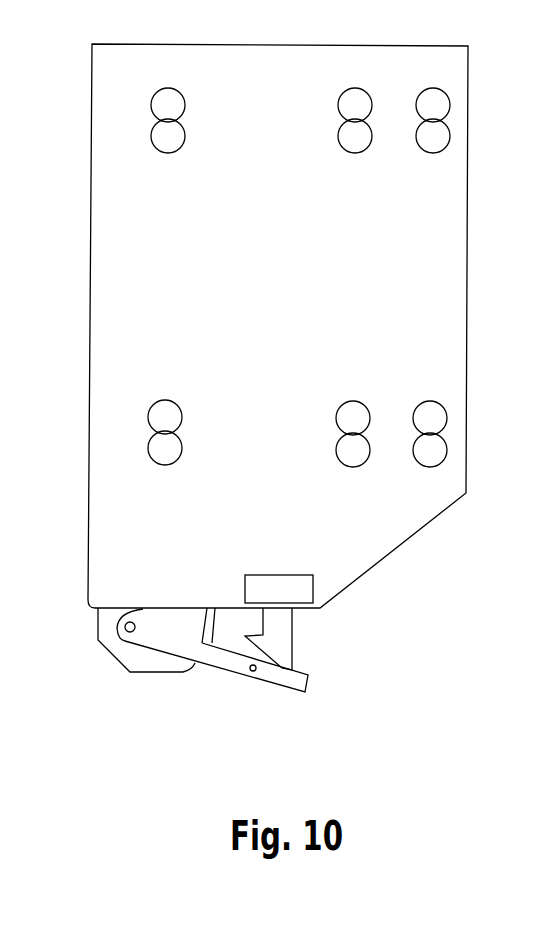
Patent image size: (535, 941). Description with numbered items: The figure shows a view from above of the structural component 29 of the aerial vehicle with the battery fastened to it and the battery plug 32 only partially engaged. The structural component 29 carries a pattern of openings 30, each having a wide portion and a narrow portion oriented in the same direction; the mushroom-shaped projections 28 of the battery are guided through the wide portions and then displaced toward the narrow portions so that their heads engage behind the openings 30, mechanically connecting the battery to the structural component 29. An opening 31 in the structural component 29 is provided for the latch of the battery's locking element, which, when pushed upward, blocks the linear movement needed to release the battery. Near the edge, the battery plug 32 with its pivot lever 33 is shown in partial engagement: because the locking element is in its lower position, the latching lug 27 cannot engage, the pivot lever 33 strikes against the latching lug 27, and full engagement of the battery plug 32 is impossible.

The latching lug 27 is at (295, 635).
The projections 28 is at (180, 90).
The structural component 29 is at (88, 583).
The openings 30 is at (168, 153).
The opening 31 is at (278, 590).
The battery plug 32 is at (108, 655).
The pivot lever 33 is at (225, 672).